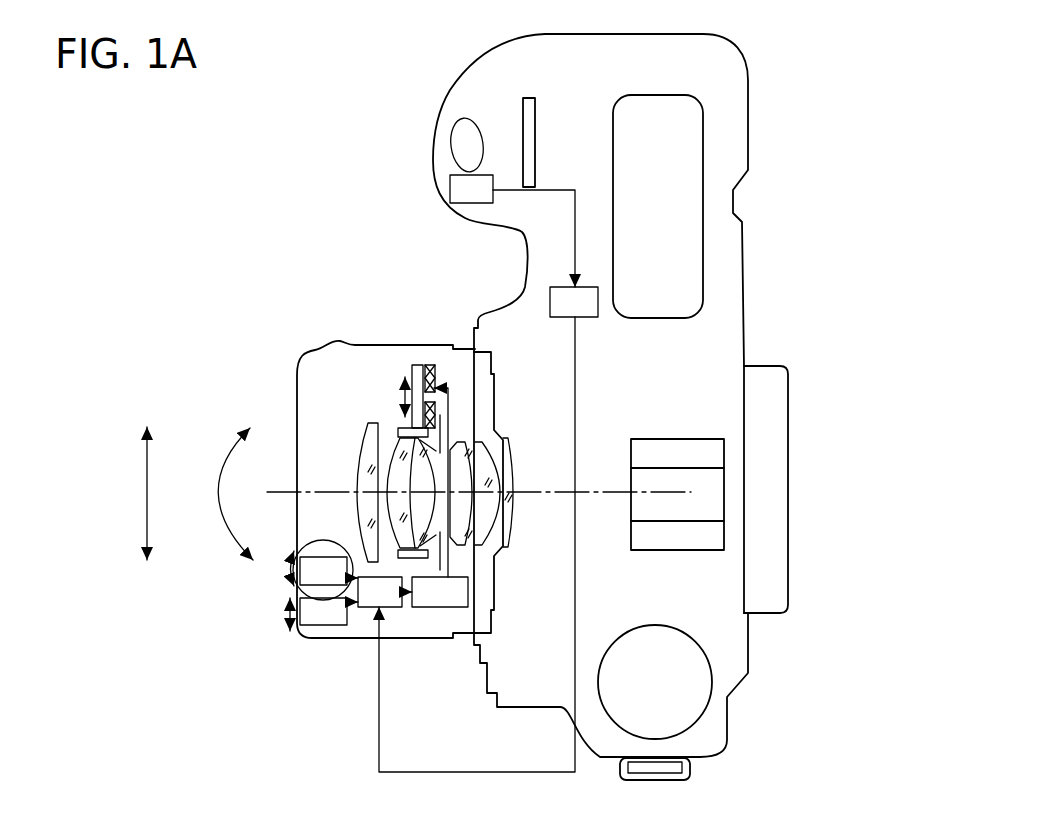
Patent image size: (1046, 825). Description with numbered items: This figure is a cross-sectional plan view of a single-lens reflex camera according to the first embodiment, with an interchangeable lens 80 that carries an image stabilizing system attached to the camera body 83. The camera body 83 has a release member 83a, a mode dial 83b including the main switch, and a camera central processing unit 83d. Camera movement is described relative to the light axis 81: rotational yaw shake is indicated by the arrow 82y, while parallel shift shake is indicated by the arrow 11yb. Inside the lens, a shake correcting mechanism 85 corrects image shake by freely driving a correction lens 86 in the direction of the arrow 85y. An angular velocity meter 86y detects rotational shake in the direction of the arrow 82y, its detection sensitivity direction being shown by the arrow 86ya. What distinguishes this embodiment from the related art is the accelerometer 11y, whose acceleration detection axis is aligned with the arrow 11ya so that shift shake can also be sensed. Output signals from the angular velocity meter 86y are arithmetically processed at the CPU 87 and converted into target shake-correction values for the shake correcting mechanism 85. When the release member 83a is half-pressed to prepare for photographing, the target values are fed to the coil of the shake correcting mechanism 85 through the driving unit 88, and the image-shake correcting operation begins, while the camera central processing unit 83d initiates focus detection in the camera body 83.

The interchangeable lens 80 is at (296, 364).
The light axis 81 is at (277, 490).
The yaw shake arrow 82y is at (217, 512).
The camera body 83 is at (466, 70).
The release member 83a is at (458, 148).
The mode dial 83b is at (687, 707).
The camera central processing unit 83d is at (550, 302).
The shake correcting mechanism 85 is at (385, 380).
The correction lens drive direction arrow 85y is at (404, 397).
The correction lens 86 is at (394, 468).
The angular velocity meter 86y is at (296, 577).
The detection sensitivity direction arrow 86ya is at (324, 540).
The CPU 87 is at (368, 609).
The driving unit 88 is at (438, 609).
The accelerometer 11y is at (323, 626).
The acceleration detection axis arrow 11ya is at (287, 620).
The shift shake arrow 11yb is at (147, 473).